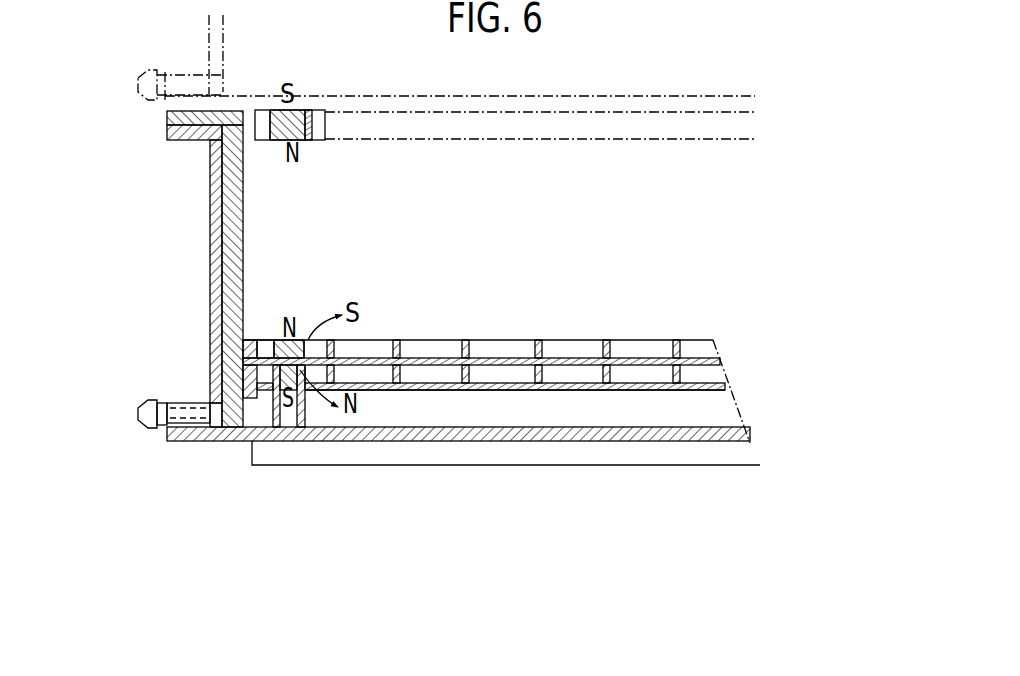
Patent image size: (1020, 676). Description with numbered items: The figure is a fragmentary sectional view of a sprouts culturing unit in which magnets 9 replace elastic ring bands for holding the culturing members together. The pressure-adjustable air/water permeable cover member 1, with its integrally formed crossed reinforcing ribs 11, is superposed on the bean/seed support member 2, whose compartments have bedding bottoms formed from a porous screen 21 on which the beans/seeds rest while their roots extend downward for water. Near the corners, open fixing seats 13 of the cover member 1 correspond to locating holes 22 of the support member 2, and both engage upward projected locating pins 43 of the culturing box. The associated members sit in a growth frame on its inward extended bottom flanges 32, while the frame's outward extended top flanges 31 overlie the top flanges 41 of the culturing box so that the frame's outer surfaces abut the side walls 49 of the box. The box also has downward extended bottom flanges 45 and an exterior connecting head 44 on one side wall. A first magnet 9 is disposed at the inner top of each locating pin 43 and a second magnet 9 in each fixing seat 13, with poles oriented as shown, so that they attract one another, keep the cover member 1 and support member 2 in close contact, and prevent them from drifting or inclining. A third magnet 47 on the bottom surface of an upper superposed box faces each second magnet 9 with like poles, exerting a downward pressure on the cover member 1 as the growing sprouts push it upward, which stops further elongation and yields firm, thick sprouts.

The pressure-adjustable air/water permeable cover member 1 is at (722, 352).
The bean/seed support member 2 is at (727, 378).
The magnet 9 is at (278, 340).
The reinforcing ribs 11 is at (713, 340).
The fixing seats 13 is at (247, 348).
The porous screen 21 is at (727, 388).
The locating holes 22 is at (236, 405).
The top flanges 31 is at (167, 123).
The bottom flanges 32 is at (223, 427).
The top flanges 41 is at (167, 137).
The locating pins 43 is at (272, 405).
The exterior connecting head 44 is at (140, 413).
The bottom flanges 45 is at (602, 458).
The third magnet 47 is at (317, 140).
The side walls 49 is at (215, 240).